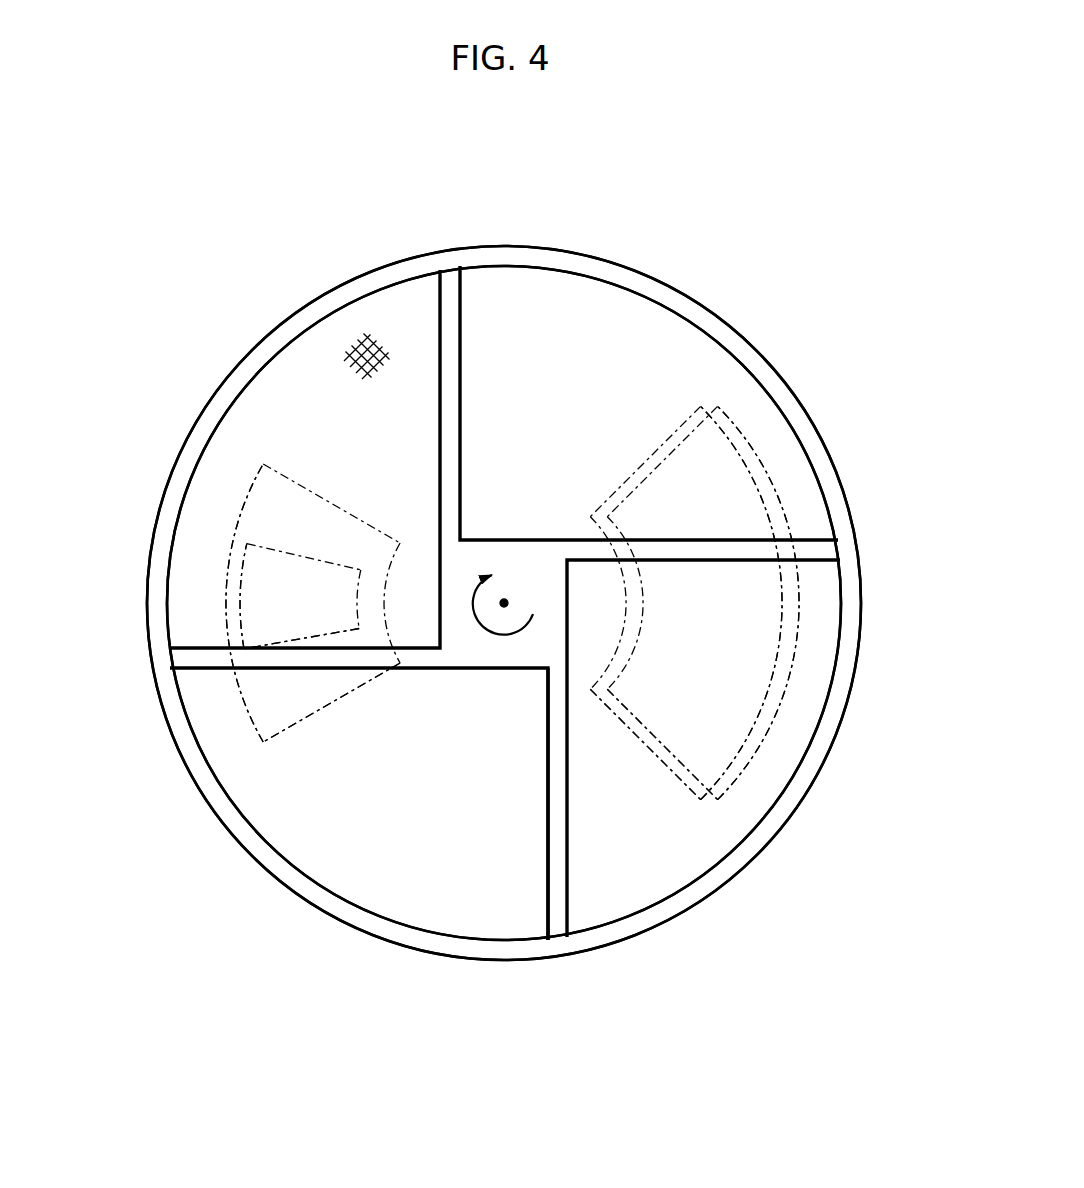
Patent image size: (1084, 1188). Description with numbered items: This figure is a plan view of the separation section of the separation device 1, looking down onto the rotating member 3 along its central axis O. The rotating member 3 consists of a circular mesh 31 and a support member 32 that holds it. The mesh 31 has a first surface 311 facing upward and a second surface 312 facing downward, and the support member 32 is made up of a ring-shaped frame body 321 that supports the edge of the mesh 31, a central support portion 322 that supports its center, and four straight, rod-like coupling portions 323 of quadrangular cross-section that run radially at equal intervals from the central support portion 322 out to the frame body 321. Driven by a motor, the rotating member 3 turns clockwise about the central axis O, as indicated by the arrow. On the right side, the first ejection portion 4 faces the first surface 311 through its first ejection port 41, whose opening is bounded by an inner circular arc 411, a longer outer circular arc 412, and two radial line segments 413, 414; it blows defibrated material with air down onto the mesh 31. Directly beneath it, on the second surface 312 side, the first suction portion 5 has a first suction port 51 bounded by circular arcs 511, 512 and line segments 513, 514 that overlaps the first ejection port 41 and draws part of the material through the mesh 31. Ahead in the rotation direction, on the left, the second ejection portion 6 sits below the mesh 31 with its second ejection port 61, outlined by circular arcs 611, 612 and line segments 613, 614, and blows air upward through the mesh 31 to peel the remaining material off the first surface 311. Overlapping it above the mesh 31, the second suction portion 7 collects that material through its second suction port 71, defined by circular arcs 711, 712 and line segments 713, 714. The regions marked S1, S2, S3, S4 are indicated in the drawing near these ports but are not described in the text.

The separation device 1 is at (772, 148).
The rotating member 3 is at (735, 312).
The mesh 31 is at (313, 382).
The first surface 311 is at (322, 800).
The second surface 312 is at (345, 845).
The support member 32 is at (468, 961).
The frame body 321 is at (413, 942).
The central support portion 322 is at (472, 640).
The coupling portion 323 is at (567, 857).
The first ejection portion 4 is at (740, 457).
The first ejection port 41 is at (720, 438).
The circular arc 411 is at (625, 525).
The circular arc 412 is at (766, 509).
The line segment 413 is at (727, 770).
The line segment 414 is at (622, 487).
The first suction portion 5 is at (796, 619).
The first suction port 51 is at (766, 468).
The circular arc 511 is at (598, 583).
The circular arc 512 is at (788, 594).
The line segment 513 is at (708, 832).
The line segment 514 is at (640, 518).
The second ejection portion 6 is at (247, 567).
The second ejection port 61 is at (252, 552).
The circular arc 611 is at (383, 562).
The circular arc 612 is at (236, 592).
The line segment 613 is at (300, 556).
The line segment 614 is at (318, 700).
The second suction portion 7 is at (233, 501).
The second suction port 71 is at (243, 477).
The circular arc 711 is at (411, 585).
The circular arc 712 is at (226, 575).
The line segment 713 is at (316, 520).
The line segment 714 is at (380, 700).
The first space S1 is at (726, 667).
The second space S2 is at (746, 722).
The third space S3 is at (243, 650).
The fourth space S4 is at (276, 630).
The central axis O is at (511, 598).